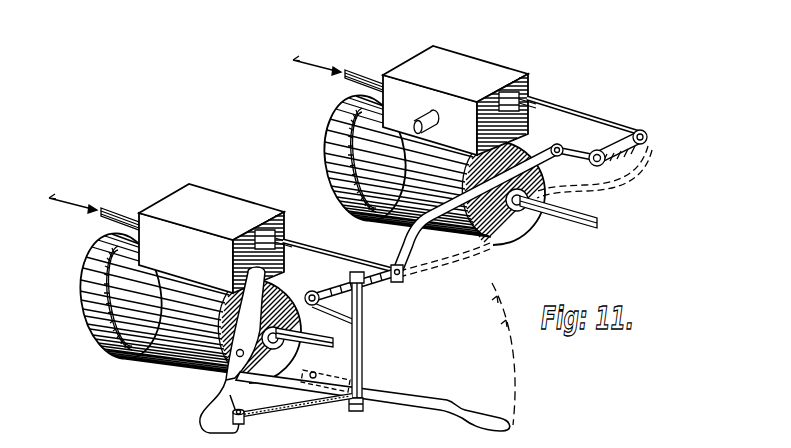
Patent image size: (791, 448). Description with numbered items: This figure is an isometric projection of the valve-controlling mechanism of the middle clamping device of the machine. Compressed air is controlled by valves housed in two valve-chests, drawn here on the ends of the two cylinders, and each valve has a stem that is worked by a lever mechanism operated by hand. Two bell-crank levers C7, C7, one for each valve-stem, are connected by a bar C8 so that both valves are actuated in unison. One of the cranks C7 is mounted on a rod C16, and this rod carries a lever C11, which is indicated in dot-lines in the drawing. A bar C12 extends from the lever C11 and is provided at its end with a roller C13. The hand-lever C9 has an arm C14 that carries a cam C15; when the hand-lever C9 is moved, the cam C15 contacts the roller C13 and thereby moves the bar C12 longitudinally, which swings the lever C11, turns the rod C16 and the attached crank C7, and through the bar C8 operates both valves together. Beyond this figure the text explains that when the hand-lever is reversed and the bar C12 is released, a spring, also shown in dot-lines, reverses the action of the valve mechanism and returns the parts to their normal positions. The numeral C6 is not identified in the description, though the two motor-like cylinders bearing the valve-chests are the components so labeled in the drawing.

The electric motor C6 is at (84, 277).
The bell-crank lever C7 is at (378, 283).
The bar C8 is at (394, 262).
The hand-lever C9 is at (578, 112).
The spring C11 is at (437, 272).
The bar C12 is at (298, 402).
The roller C13 is at (247, 419).
The arm C14 is at (227, 391).
The cam C15 is at (198, 420).
The rod C16 is at (365, 342).